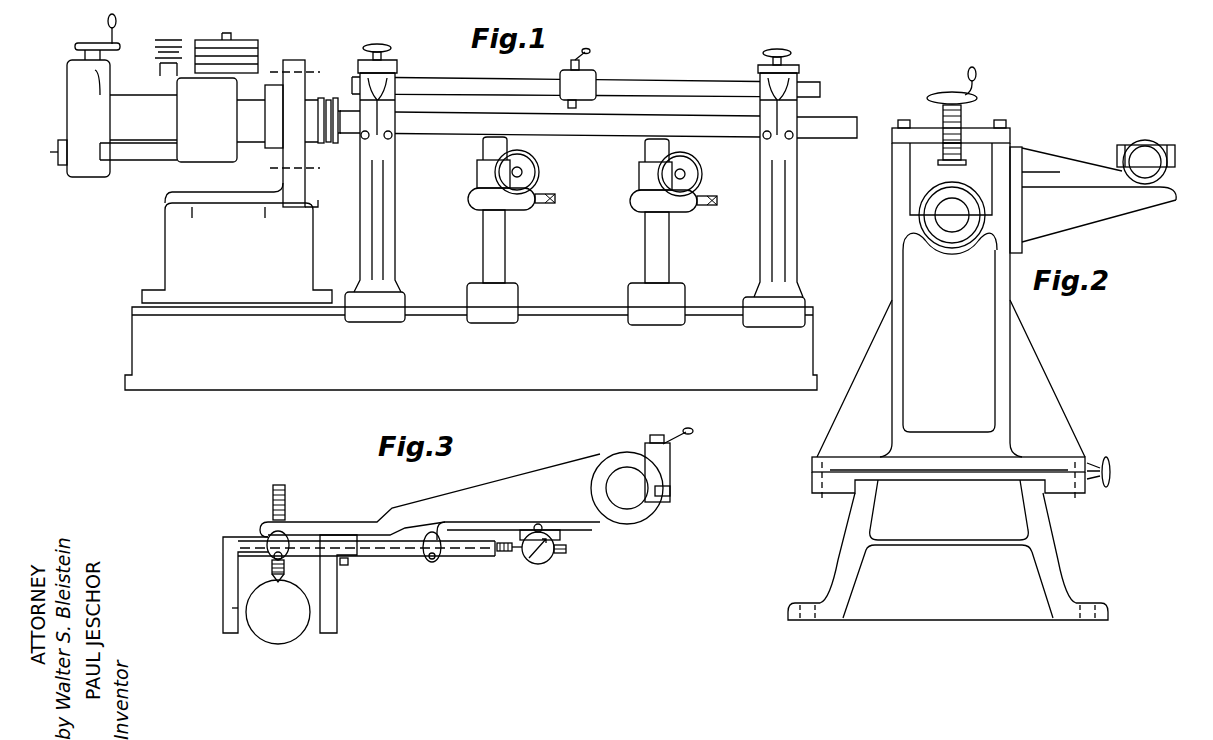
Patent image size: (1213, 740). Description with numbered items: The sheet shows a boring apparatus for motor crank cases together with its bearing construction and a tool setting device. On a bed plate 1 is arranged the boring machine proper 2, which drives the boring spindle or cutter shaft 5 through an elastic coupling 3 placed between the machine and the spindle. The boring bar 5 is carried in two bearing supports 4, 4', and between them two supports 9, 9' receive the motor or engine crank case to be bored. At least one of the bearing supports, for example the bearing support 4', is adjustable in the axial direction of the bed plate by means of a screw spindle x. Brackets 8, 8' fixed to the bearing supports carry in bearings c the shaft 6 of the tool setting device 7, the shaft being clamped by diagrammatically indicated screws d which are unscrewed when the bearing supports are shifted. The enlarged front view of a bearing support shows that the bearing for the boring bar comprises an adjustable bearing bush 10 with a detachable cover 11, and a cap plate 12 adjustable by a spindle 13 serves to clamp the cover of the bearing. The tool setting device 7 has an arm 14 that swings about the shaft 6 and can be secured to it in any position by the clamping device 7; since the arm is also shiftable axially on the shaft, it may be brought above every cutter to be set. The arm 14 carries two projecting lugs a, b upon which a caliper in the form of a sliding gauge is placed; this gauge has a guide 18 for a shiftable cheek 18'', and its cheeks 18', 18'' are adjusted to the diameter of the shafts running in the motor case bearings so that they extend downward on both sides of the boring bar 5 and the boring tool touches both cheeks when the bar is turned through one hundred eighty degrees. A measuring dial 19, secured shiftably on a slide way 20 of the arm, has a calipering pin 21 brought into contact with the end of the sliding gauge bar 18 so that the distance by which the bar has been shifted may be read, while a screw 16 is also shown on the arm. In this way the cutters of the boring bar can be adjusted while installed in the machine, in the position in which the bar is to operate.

In FIG. 1, the bed plate 1 is at (471, 348).
In FIG. 2, the bed plate 1 is at (1020, 500).
In FIG. 1, the boring machine proper 2 is at (185, 110).
In FIG. 1, the elastic coupling 3 is at (326, 97).
In FIG. 1, the bearing support 4 is at (395, 160).
In FIG. 1, the bearing support 4' is at (794, 162).
In FIG. 2, the bearing support 4' is at (951, 300).
In FIG. 1, the boring spindle or cutter shaft 5 is at (588, 132).
In FIG. 3, the boring spindle or cutter shaft 5 is at (295, 635).
In FIG. 1, the shaft 6 is at (647, 80).
In FIG. 2, the shaft 6 is at (1146, 155).
In FIG. 3, the shaft 6 is at (631, 503).
In FIG. 1, the tool setting device 7 is at (590, 71).
In FIG. 3, the tool setting device 7 is at (643, 460).
In FIG. 1, the bracket 8 is at (391, 74).
In FIG. 2, the bracket 8 is at (1093, 200).
In FIG. 1, the bracket 8' is at (795, 77).
In FIG. 1, the support 9 is at (511, 210).
In FIG. 1, the support 9' is at (673, 211).
In FIG. 2, the adjustable bearing bush 10 is at (950, 211).
In FIG. 2, the detachable cover 11 is at (914, 178).
In FIG. 2, the cap plate 12 is at (982, 132).
In FIG. 2, the spindle 13 is at (962, 118).
In FIG. 3, the arm 14 is at (487, 492).
In FIG. 3, the adjusting screw 16 is at (286, 503).
In FIG. 3, the guide 18 is at (366, 562).
In FIG. 3, the cheek 18' is at (231, 585).
In FIG. 3, the shiftable cheek 18'' is at (351, 584).
In FIG. 3, the measuring dial 19 is at (548, 558).
In FIG. 3, the slide way 20 is at (616, 524).
In FIG. 3, the calipering pin 21 is at (508, 553).
In FIG. 3, the projecting lug a is at (271, 558).
In FIG. 3, the projecting lug b is at (439, 558).
In FIG. 2, the bearing c is at (1176, 165).
In FIG. 2, the screw d is at (1123, 141).
In FIG. 2, the screw spindle x is at (1093, 464).